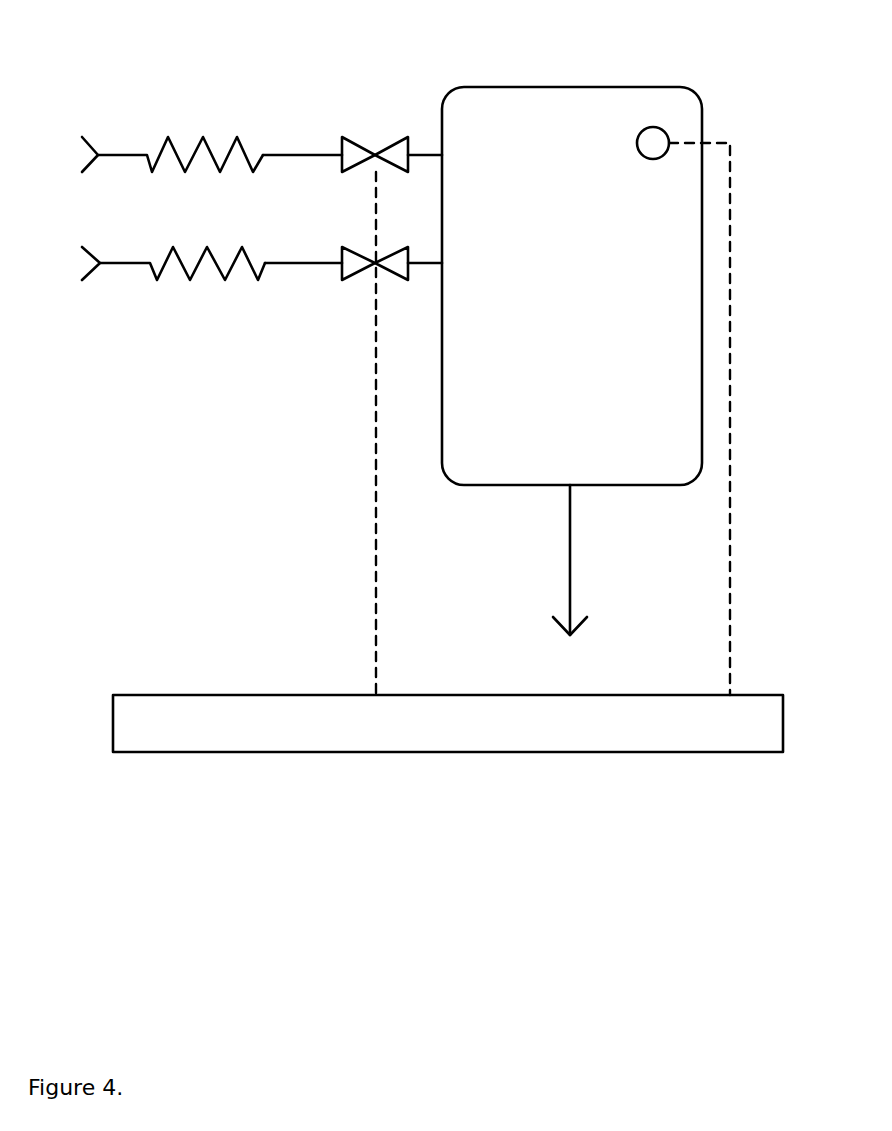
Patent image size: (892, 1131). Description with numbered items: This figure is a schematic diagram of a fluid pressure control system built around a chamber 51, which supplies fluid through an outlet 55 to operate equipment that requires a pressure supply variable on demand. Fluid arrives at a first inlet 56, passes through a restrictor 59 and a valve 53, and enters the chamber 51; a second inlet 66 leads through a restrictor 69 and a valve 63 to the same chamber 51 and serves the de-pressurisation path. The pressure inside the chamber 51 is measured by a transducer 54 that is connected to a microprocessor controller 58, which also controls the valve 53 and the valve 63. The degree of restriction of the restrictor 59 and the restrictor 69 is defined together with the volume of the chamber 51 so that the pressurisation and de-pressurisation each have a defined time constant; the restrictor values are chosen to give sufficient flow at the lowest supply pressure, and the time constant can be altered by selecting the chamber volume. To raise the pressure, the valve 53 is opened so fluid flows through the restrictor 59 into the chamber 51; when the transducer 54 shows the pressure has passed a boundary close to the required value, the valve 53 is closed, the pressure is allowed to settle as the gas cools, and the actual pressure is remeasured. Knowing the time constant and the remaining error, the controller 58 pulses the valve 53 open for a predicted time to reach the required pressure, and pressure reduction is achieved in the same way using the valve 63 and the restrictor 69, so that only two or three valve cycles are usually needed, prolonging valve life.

The chamber 51 is at (542, 113).
The valve 53 is at (353, 152).
The transducer 54 is at (649, 140).
The outlet 55 is at (586, 667).
The first gas inlet 56 is at (74, 167).
The microprocessor controller 58 is at (197, 720).
The restrictor 59 is at (178, 148).
The valve 63 is at (352, 275).
The second gas inlet 66 is at (72, 278).
The restrictor 69 is at (215, 270).